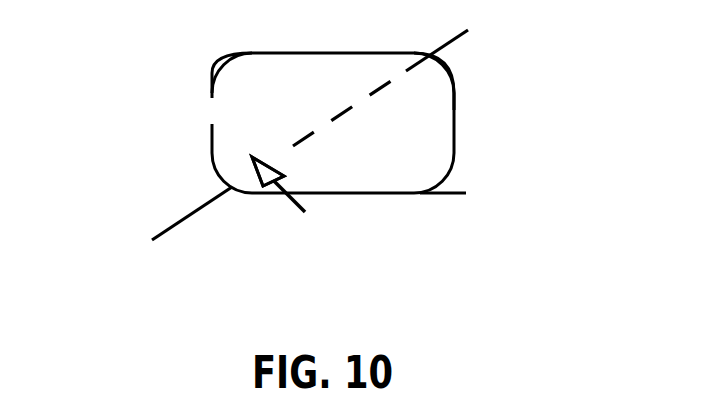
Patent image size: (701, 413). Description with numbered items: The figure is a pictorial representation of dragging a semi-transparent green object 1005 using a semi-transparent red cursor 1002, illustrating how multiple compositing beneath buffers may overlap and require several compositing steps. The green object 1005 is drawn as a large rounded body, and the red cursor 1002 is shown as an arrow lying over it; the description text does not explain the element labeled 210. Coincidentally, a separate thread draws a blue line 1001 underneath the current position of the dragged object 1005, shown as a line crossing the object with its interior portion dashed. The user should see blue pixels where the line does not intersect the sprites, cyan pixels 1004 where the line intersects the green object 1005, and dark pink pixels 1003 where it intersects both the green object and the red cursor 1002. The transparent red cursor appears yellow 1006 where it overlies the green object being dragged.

The light valve / display panel 210 is at (297, 138).
The blue line 1001 is at (466, 37).
The semi-transparent red cursor 1002 is at (302, 207).
The dark pink pixels 1003 is at (263, 162).
The cyan pixels 1004 is at (358, 102).
The semi-transparent green object 1005 is at (217, 80).
The yellow region 1006 is at (263, 162).